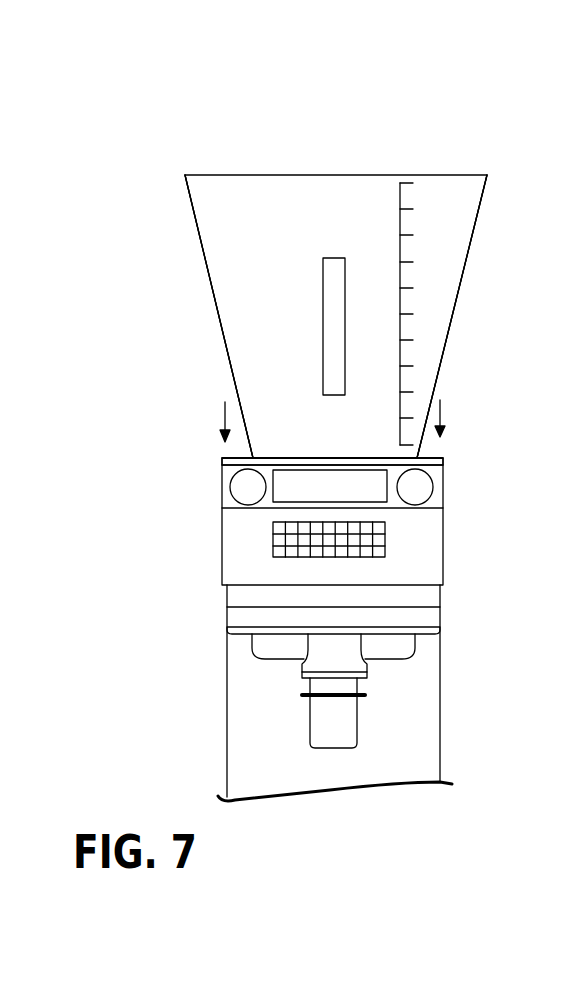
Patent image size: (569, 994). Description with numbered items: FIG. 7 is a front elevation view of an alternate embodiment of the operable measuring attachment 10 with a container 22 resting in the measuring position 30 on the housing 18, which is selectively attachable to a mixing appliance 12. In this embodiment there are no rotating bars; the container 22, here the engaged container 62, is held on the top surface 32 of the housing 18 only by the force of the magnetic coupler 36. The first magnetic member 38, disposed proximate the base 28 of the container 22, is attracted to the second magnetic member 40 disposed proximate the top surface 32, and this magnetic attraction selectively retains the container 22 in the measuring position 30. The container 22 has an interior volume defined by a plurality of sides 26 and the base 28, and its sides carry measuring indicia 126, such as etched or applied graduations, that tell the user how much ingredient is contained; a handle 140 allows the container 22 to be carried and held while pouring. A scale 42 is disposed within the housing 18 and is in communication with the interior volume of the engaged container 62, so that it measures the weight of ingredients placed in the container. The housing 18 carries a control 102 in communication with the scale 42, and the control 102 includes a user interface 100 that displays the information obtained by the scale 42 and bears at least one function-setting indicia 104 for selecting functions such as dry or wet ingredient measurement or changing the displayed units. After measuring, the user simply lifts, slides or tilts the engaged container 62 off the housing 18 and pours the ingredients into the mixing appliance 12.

The operable measuring attachment 10 is at (169, 406).
The mixing appliance 12 is at (456, 628).
The housing 18 is at (200, 489).
The container 22 is at (478, 245).
The sides 26 is at (455, 303).
The base 28 is at (378, 458).
The measuring position 30 is at (170, 266).
The top surface 32 is at (428, 458).
The magnetic coupler 36 is at (244, 445).
The first magnetic member 38 is at (280, 455).
The second magnetic member 40 is at (223, 458).
The scale 42 is at (380, 498).
The engaged container 62 is at (283, 160).
The user interface 100 is at (243, 500).
The control 102 is at (383, 548).
The function-setting indicia 104 is at (283, 493).
The measuring indicia 126 is at (405, 208).
The handle 140 is at (333, 277).